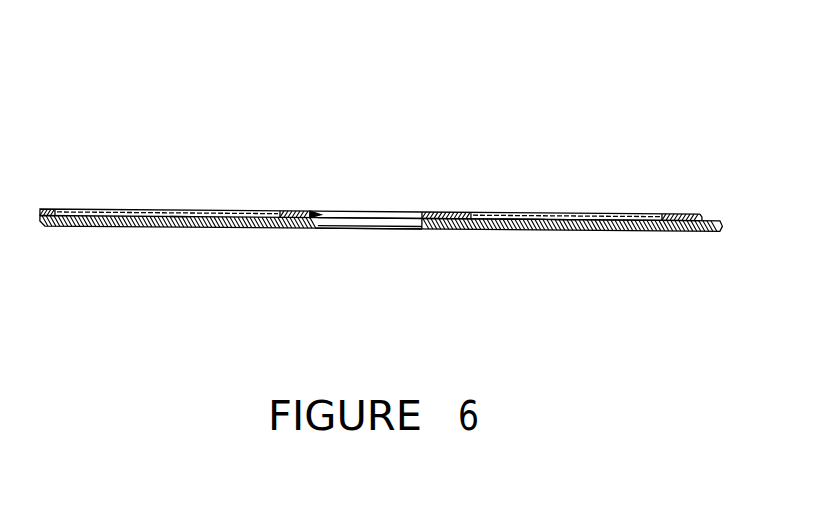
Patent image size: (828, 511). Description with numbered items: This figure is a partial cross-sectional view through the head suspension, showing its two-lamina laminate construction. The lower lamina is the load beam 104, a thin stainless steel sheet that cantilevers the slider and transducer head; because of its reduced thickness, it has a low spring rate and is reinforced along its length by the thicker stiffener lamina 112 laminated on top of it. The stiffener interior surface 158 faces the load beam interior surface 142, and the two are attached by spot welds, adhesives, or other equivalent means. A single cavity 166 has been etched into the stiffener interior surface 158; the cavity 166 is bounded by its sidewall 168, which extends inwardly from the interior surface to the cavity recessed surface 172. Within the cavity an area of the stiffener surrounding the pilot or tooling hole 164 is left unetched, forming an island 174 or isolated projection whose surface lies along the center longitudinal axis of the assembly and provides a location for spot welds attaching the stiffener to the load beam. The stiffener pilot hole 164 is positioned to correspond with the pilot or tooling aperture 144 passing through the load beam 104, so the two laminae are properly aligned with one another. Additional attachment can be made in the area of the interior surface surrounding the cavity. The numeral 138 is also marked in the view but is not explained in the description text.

The load beam 104 is at (212, 228).
The stiffener lamina 112 is at (98, 210).
The ferrule 138 is at (282, 228).
The load beam interior surface 142 is at (498, 213).
The pilot or tooling aperture 144 is at (333, 227).
The stiffener interior surface 158 is at (422, 227).
The pilot or tooling hole 164 is at (320, 213).
The cavity 166 is at (181, 220).
The cavity sidewall 168 is at (668, 215).
The cavity recessed surface 172 is at (118, 210).
The island 174 is at (480, 213).